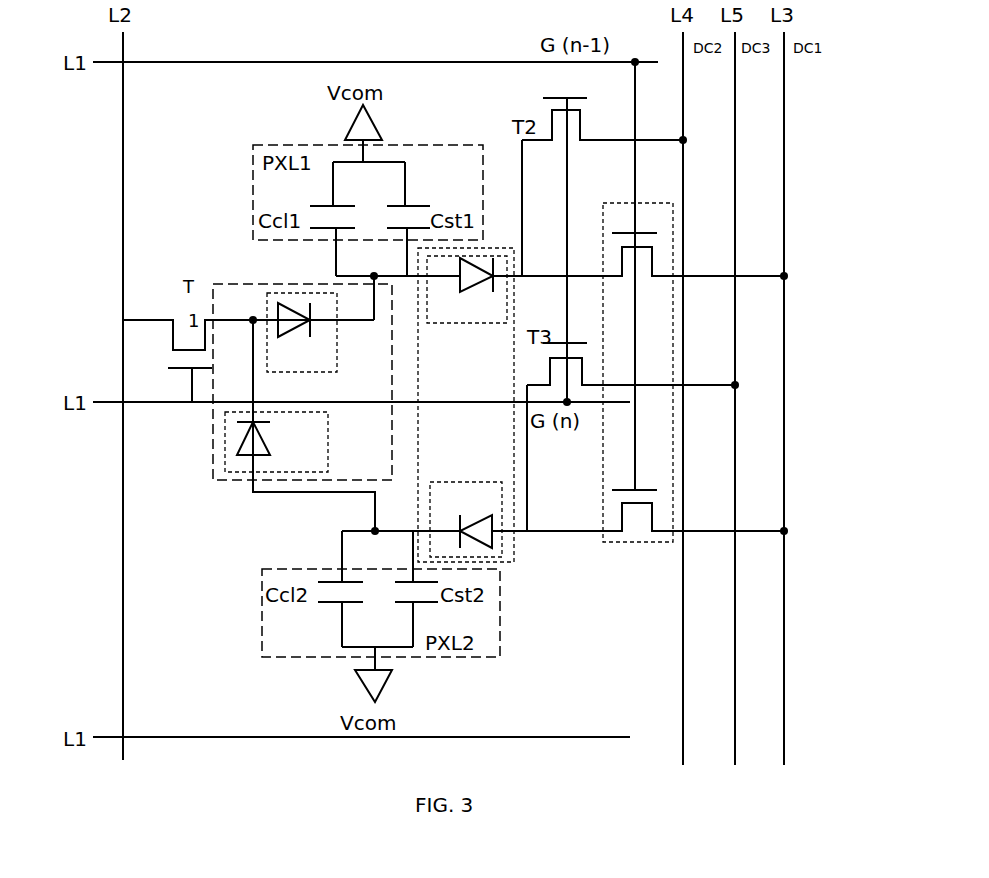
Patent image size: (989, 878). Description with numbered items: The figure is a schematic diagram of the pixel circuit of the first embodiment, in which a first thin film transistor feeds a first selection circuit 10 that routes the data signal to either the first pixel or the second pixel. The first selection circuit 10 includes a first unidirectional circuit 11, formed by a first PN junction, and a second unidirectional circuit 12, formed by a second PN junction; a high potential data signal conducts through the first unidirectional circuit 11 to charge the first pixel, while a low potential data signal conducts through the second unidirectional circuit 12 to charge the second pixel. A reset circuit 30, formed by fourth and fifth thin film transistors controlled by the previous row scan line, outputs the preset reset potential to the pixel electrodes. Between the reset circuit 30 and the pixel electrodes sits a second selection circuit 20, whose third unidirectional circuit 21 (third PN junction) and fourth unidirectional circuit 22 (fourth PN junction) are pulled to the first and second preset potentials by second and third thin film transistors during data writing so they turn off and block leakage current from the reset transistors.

The first selection circuit 10 is at (212, 463).
The first unidirectional circuit 11 is at (337, 366).
The second unidirectional circuit 12 is at (329, 442).
The second selection circuit 20 is at (419, 392).
The third unidirectional circuit 21 is at (443, 324).
The fourth unidirectional circuit 22 is at (448, 483).
The reset circuit 30 is at (620, 543).